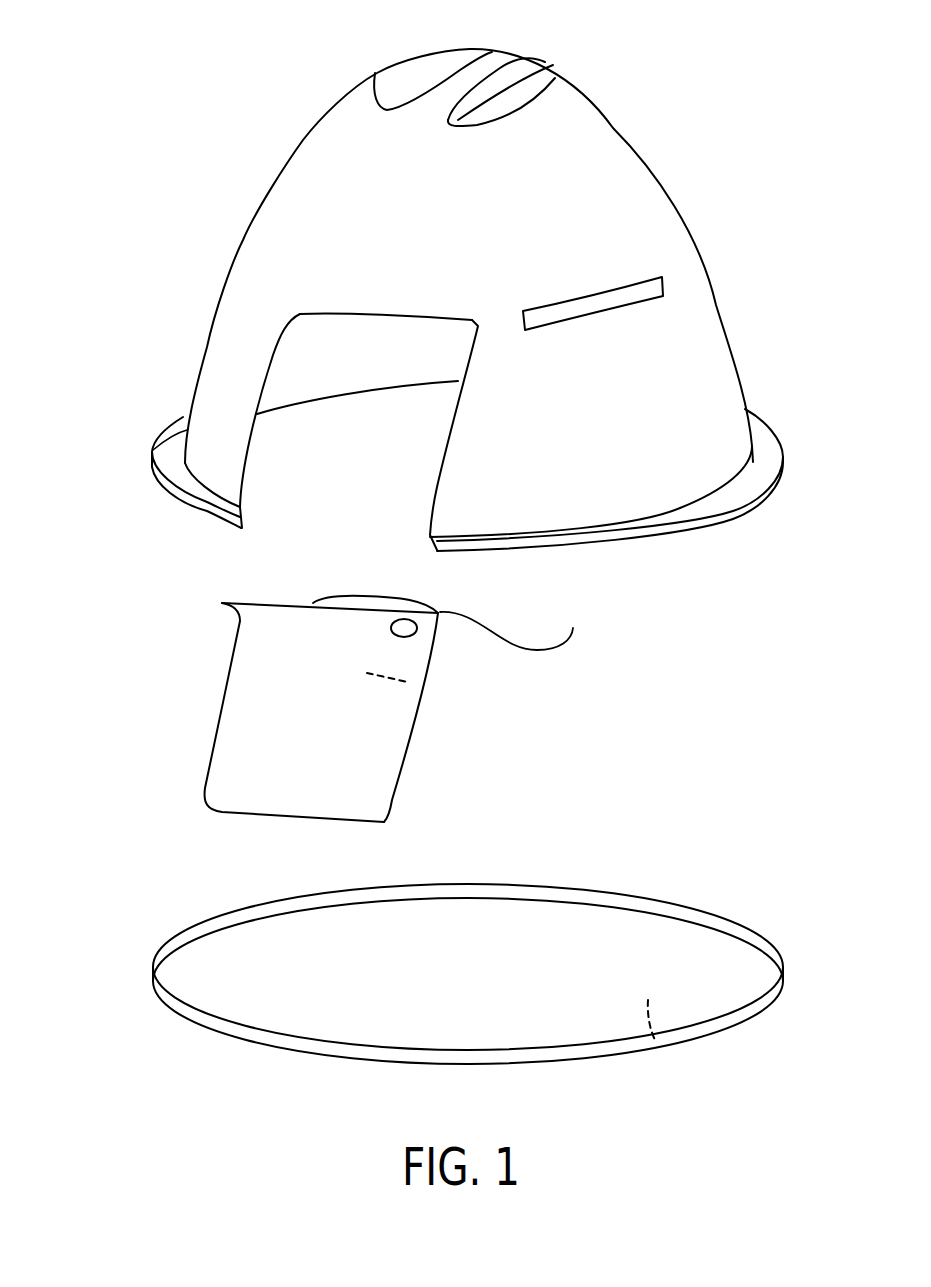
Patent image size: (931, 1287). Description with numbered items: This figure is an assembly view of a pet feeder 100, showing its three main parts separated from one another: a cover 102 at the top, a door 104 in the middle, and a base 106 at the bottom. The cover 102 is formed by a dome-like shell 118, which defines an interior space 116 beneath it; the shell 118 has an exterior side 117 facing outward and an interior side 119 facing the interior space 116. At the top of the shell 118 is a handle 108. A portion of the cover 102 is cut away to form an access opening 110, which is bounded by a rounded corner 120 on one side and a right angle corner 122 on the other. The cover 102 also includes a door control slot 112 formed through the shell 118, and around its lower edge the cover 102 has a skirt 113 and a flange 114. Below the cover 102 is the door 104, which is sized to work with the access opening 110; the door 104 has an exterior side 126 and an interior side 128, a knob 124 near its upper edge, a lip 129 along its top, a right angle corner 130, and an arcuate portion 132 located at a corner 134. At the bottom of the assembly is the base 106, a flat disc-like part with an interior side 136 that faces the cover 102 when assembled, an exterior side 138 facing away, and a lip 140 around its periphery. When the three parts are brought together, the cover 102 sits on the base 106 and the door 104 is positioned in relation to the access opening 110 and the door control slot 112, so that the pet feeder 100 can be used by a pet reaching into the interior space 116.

The pet feeder 100 is at (105, 222).
The cover 102 is at (716, 313).
The door 104 is at (393, 775).
The base 106 is at (469, 991).
The handle 108 is at (500, 77).
The access opening 110 is at (300, 343).
The door control slot 112 is at (623, 290).
The skirt 113 is at (763, 462).
The flange 114 is at (713, 517).
The interior space 116 is at (373, 445).
The exterior side 117 is at (685, 408).
The shell 118 is at (412, 241).
The interior side 119 is at (402, 365).
The rounded corner 120 is at (285, 322).
The right angle corner 122 is at (478, 325).
The knob 124 is at (418, 630).
The exterior side 126 is at (334, 681).
The interior side 128 is at (407, 682).
The lip 129 is at (343, 600).
The right angle corner 130 is at (517, 629).
The arcuate portion 132 is at (237, 619).
The corner 134 is at (245, 602).
The interior side 136 is at (598, 922).
The exterior side 138 is at (660, 1045).
The lip 140 is at (773, 997).